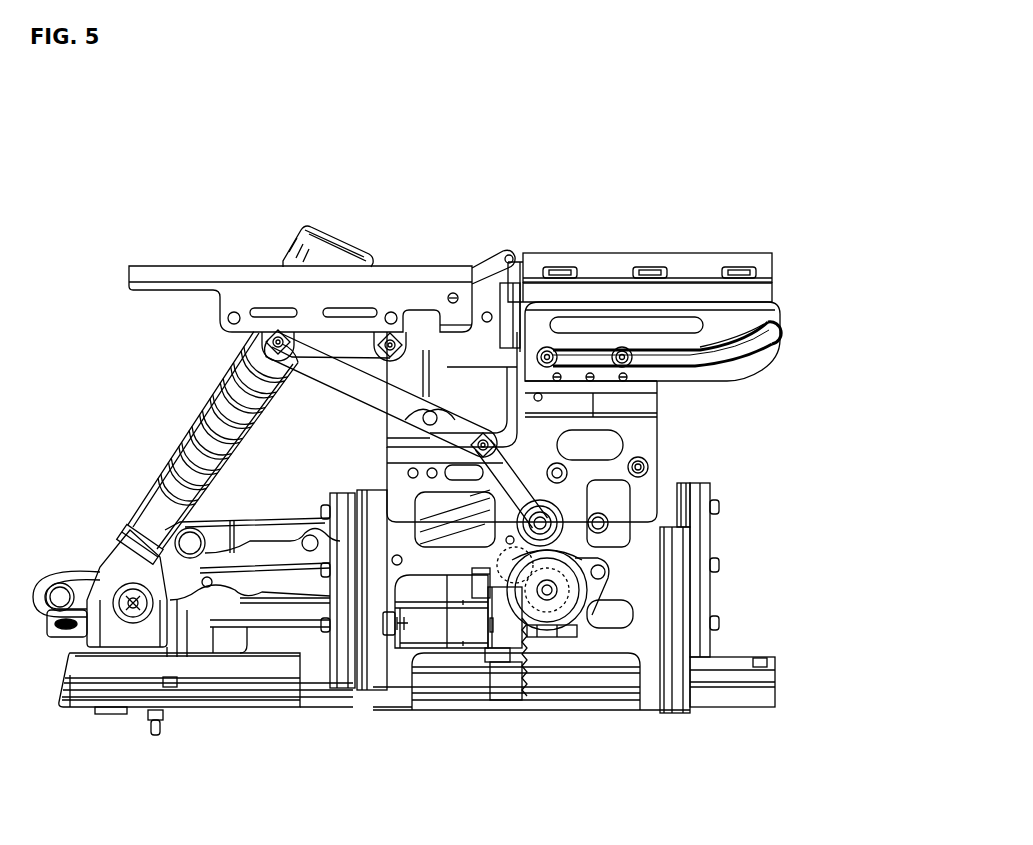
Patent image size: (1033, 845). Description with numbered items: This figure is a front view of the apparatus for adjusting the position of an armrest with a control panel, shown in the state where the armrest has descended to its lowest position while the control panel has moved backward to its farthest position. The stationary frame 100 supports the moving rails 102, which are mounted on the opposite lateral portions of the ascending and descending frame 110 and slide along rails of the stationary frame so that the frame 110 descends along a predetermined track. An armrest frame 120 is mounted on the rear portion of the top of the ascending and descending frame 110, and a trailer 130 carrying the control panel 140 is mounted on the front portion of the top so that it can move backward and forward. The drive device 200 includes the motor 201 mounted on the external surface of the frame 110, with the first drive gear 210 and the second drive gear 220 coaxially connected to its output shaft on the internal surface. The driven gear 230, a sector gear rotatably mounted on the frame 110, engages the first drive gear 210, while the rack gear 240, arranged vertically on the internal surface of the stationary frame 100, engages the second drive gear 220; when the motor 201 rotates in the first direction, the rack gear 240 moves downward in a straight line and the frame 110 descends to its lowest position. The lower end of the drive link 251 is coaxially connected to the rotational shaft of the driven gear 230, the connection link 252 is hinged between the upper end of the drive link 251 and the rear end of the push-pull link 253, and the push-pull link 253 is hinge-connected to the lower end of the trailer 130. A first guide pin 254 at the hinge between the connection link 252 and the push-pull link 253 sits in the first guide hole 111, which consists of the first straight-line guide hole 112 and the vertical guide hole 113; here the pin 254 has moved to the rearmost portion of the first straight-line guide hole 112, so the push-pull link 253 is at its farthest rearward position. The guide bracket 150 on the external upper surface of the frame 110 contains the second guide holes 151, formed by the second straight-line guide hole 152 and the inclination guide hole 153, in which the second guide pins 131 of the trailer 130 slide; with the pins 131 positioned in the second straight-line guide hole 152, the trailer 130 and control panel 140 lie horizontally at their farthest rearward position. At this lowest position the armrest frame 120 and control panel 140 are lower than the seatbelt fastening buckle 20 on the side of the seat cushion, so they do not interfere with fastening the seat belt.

The seatbelt fastening buckle 20 is at (313, 224).
The stationary frame 100 is at (333, 653).
The moving rails 102 is at (360, 700).
The ascending and descending frame 110 is at (659, 475).
The first guide hole 111 is at (444, 166).
The first straight-line guide hole 112 is at (343, 340).
The vertical guide hole 113 is at (430, 410).
The armrest frame 120 is at (178, 266).
The trailer 130 is at (774, 346).
The second guide pins 131 is at (547, 346).
The control panel 140 is at (748, 258).
The guide bracket 150 is at (757, 380).
The second guide holes 151 is at (666, 166).
The second straight-line guide hole 152 is at (653, 357).
The inclination guide hole 153 is at (750, 320).
The drive device 200 is at (558, 649).
The motor 201 is at (606, 573).
The first drive gear 210 is at (547, 602).
The second drive gear 220 is at (555, 602).
The driven gear 230 is at (490, 552).
The rack gear 240 is at (505, 690).
The drive link 251 is at (502, 477).
The connection link 252 is at (343, 378).
The push-pull link 253 is at (480, 352).
The first guide pin 254 is at (247, 363).